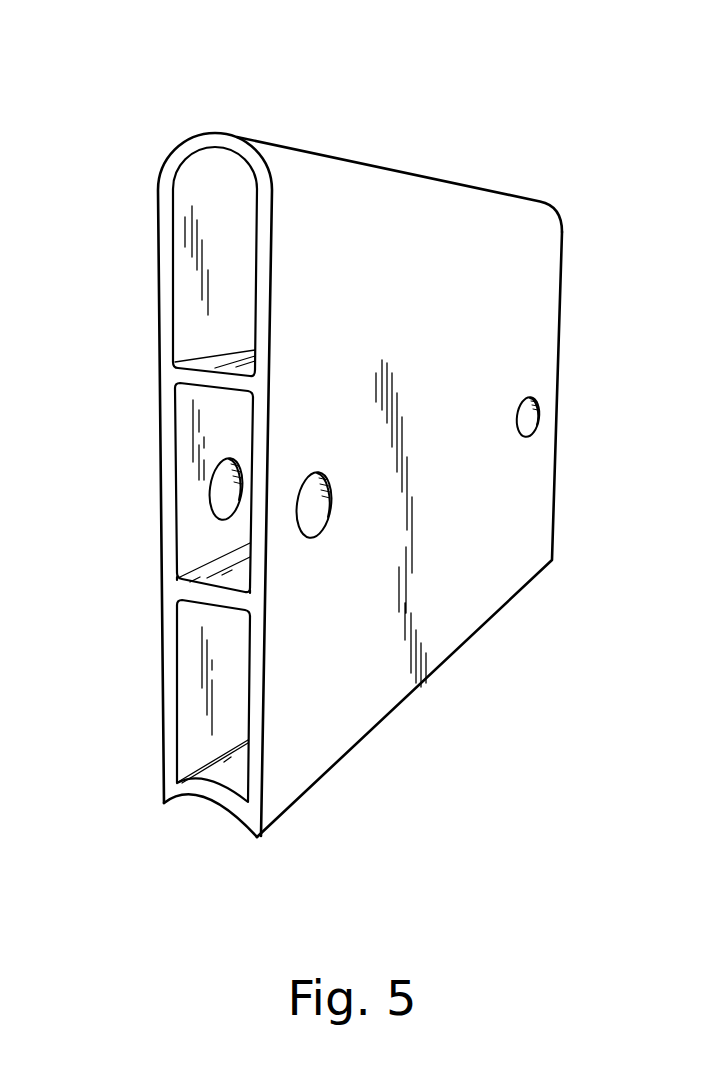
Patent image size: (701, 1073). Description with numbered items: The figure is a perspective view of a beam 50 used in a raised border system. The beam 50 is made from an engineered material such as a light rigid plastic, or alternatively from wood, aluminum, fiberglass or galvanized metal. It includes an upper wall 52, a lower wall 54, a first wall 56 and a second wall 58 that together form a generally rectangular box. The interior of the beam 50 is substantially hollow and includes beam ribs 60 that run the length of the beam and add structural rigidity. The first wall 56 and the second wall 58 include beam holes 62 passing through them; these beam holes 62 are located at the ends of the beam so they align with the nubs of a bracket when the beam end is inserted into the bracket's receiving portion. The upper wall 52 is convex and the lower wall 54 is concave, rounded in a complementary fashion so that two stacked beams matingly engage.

The beam 50 is at (367, 102).
The upper wall 52 is at (403, 172).
The lower wall 54 is at (212, 795).
The first wall 56 is at (542, 312).
The second wall 58 is at (158, 257).
The beam ribs 60 is at (182, 375).
The beam holes 62 is at (297, 527).